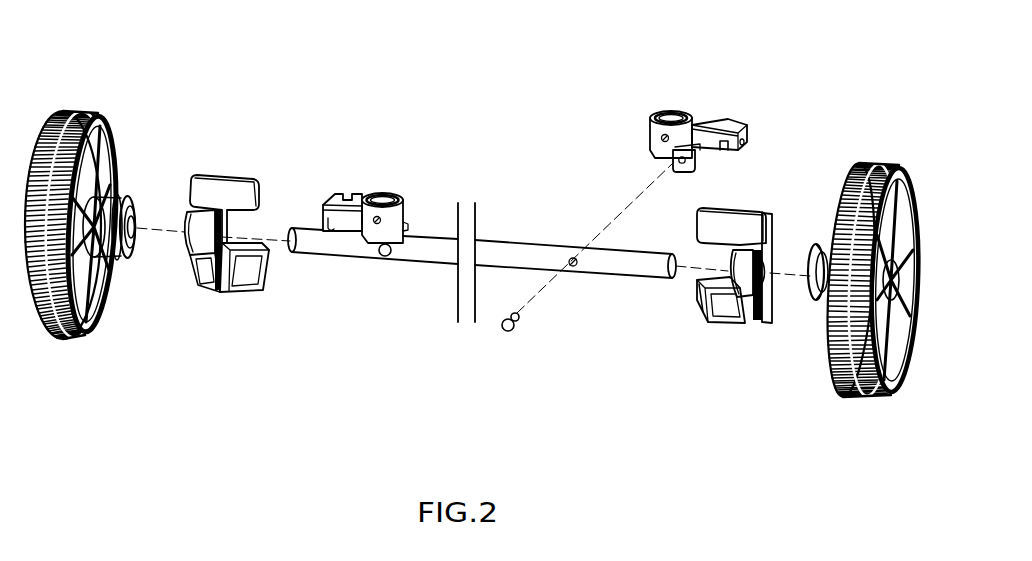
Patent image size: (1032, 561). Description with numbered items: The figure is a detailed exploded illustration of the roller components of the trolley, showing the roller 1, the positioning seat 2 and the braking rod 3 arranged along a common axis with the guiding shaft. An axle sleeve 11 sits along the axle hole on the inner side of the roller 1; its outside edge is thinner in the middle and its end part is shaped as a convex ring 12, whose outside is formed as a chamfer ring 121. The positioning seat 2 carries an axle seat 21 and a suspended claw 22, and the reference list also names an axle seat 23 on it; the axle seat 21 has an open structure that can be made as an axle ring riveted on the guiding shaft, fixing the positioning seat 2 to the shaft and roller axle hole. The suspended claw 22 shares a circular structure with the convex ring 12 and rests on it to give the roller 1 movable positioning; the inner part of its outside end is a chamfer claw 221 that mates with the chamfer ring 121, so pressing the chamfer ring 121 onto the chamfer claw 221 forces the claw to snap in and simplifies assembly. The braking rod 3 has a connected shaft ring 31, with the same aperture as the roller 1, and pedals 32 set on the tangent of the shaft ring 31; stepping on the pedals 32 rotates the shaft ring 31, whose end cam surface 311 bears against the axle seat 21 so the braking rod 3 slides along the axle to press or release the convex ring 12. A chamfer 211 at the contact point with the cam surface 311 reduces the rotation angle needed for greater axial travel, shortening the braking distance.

The roller 1 is at (113, 116).
The axle sleeve 11 is at (112, 197).
The convex ring 12 is at (128, 186).
The chamfer ring 121 is at (128, 262).
The positioning seat 2 is at (408, 192).
The axle seat 21 is at (682, 173).
The chamfer 211 is at (697, 157).
The suspended claw 22 is at (323, 238).
The chamfer claw 221 is at (752, 147).
The axle seat 23 is at (382, 192).
The braking rod 3 is at (213, 288).
The shaft ring 31 is at (737, 322).
The cam surface 311 is at (700, 298).
The pedals 32 is at (772, 227).